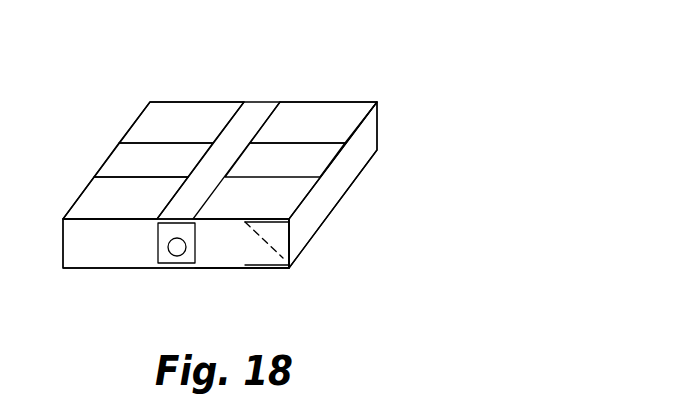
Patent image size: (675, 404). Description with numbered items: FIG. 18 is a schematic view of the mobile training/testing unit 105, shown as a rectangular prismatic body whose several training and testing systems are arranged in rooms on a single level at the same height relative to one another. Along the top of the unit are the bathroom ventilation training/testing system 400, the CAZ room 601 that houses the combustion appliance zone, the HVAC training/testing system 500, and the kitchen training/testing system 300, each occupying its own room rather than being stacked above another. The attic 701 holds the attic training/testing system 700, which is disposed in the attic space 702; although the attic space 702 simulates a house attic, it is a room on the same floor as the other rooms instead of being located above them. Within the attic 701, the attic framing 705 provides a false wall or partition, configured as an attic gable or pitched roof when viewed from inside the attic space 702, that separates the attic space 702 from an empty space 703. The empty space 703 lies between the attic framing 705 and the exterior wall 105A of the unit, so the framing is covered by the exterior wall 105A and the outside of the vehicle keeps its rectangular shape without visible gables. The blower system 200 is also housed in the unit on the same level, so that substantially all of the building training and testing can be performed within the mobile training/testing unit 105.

The mobile training/testing unit 105 is at (155, 82).
The exterior wall 105A is at (368, 132).
The bathroom ventilation training/testing system 400 is at (185, 117).
The CAZ room 601 is at (308, 125).
The HVAC training/testing system 500 is at (122, 167).
The kitchen training/testing system 300 is at (118, 197).
The attic 701 is at (285, 195).
The blower system 200 is at (165, 255).
The attic training/testing system 700 is at (210, 240).
The attic space 702 is at (255, 247).
The empty space 703 is at (268, 232).
The attic framing 705 is at (280, 257).